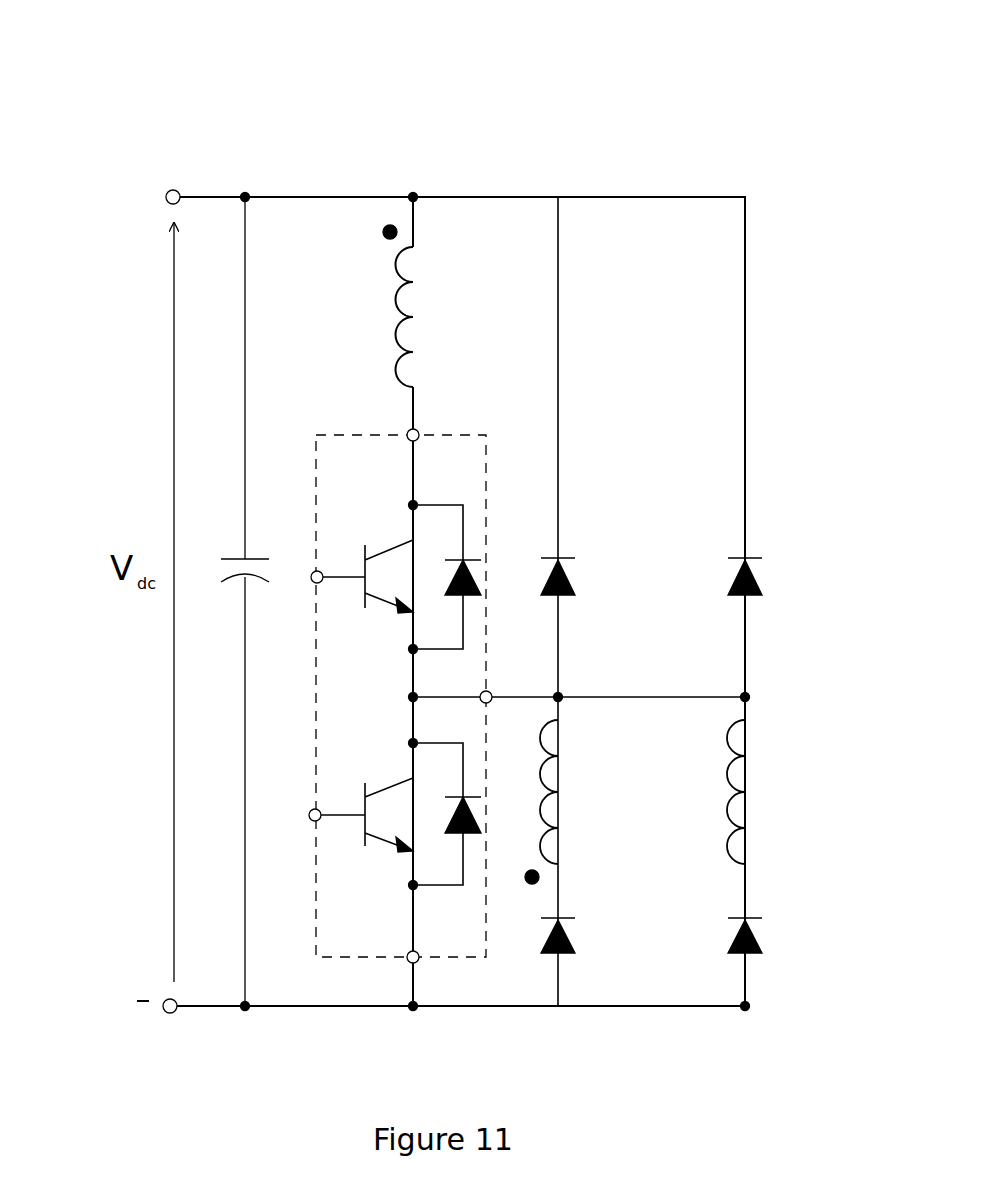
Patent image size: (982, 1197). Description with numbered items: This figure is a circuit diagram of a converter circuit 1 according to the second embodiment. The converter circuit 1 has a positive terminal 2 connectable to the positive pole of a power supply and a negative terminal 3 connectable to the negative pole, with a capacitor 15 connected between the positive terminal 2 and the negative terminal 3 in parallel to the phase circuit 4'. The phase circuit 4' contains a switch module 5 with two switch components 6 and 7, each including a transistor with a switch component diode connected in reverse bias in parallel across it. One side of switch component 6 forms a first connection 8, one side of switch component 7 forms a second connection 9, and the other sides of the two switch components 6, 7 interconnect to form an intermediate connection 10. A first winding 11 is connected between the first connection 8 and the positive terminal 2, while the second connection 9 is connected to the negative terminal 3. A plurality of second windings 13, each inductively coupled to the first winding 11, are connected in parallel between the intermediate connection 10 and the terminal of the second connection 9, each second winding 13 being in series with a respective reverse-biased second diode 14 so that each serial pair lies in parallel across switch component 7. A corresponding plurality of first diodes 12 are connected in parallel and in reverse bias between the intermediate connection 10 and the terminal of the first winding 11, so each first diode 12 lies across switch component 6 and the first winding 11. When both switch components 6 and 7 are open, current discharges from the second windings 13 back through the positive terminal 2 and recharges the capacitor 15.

The converter circuit 1 is at (221, 94).
The positive terminal 2 is at (170, 190).
The negative terminal 3 is at (165, 1015).
The phase circuit 4' is at (464, 537).
The switch module 5 is at (345, 432).
The switch component 6 is at (396, 572).
The switch component 7 is at (395, 811).
The first connection 8 is at (420, 432).
The second connection 9 is at (404, 963).
The intermediate connection 10 is at (490, 690).
The first winding 11 is at (393, 292).
The first diode 12 is at (576, 582).
The second winding 13 is at (541, 772).
The second diode 14 is at (572, 945).
The capacitor 15 is at (232, 556).